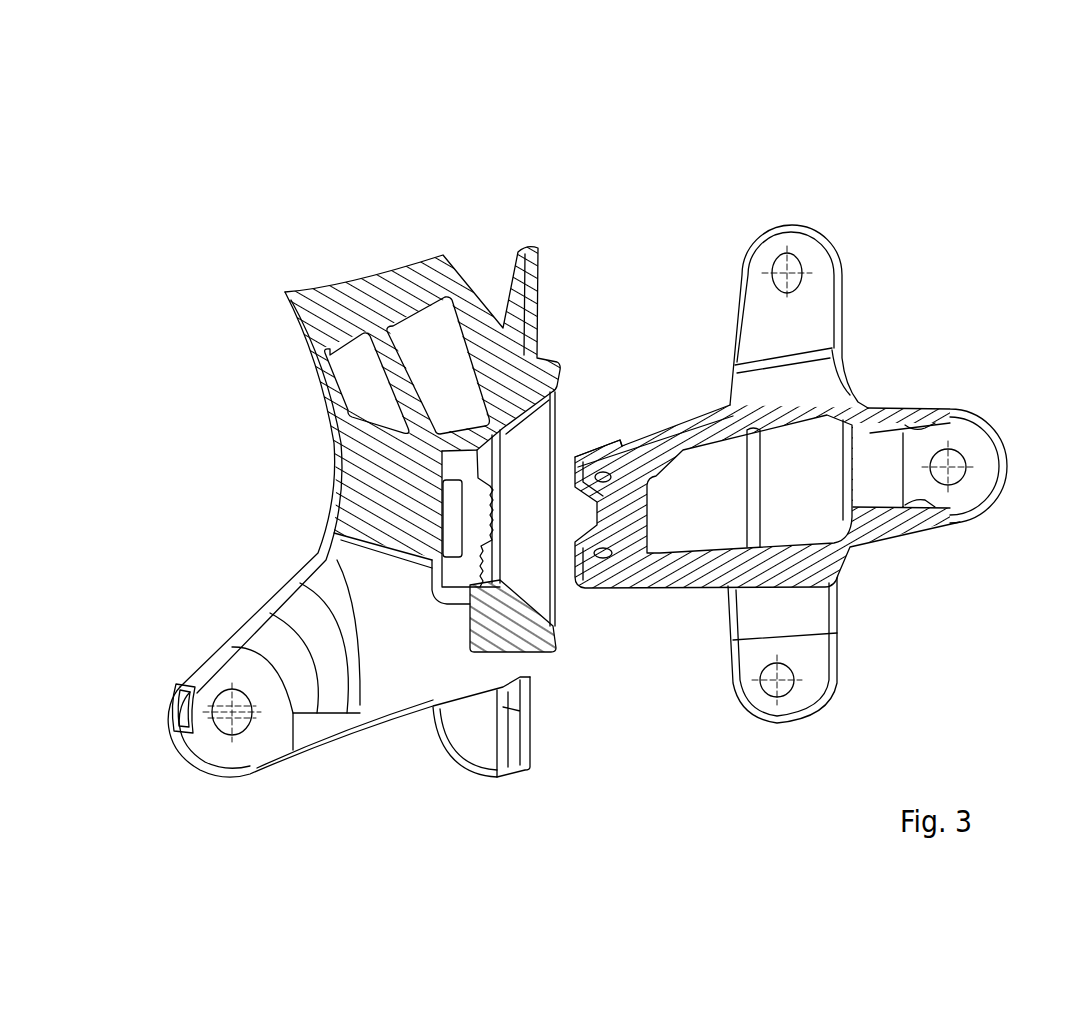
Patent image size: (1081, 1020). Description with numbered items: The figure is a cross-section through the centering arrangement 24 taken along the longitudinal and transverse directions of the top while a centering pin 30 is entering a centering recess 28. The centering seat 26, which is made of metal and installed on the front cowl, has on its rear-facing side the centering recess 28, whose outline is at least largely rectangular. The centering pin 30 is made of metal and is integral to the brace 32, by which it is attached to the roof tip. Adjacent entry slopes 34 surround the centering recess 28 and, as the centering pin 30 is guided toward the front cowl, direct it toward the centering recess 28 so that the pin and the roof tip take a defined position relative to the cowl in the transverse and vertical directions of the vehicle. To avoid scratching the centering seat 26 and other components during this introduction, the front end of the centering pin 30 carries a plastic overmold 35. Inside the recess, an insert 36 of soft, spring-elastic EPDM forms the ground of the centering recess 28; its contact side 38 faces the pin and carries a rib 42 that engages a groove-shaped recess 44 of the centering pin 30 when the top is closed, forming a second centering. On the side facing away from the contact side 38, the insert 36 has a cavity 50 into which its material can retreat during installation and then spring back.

The centering arrangement 24 is at (724, 145).
The centering seat 26 is at (333, 443).
The centering recess 28 is at (482, 443).
The centering pin 30 is at (638, 440).
The brace 32 is at (833, 325).
The entry slopes 34 is at (523, 412).
The plastic overmold 35 is at (588, 443).
The insert 36 is at (455, 463).
The contact side 38 is at (478, 560).
The rib 42 is at (492, 511).
The groove-shaped recess 44 is at (590, 518).
The cavity 50 is at (448, 535).